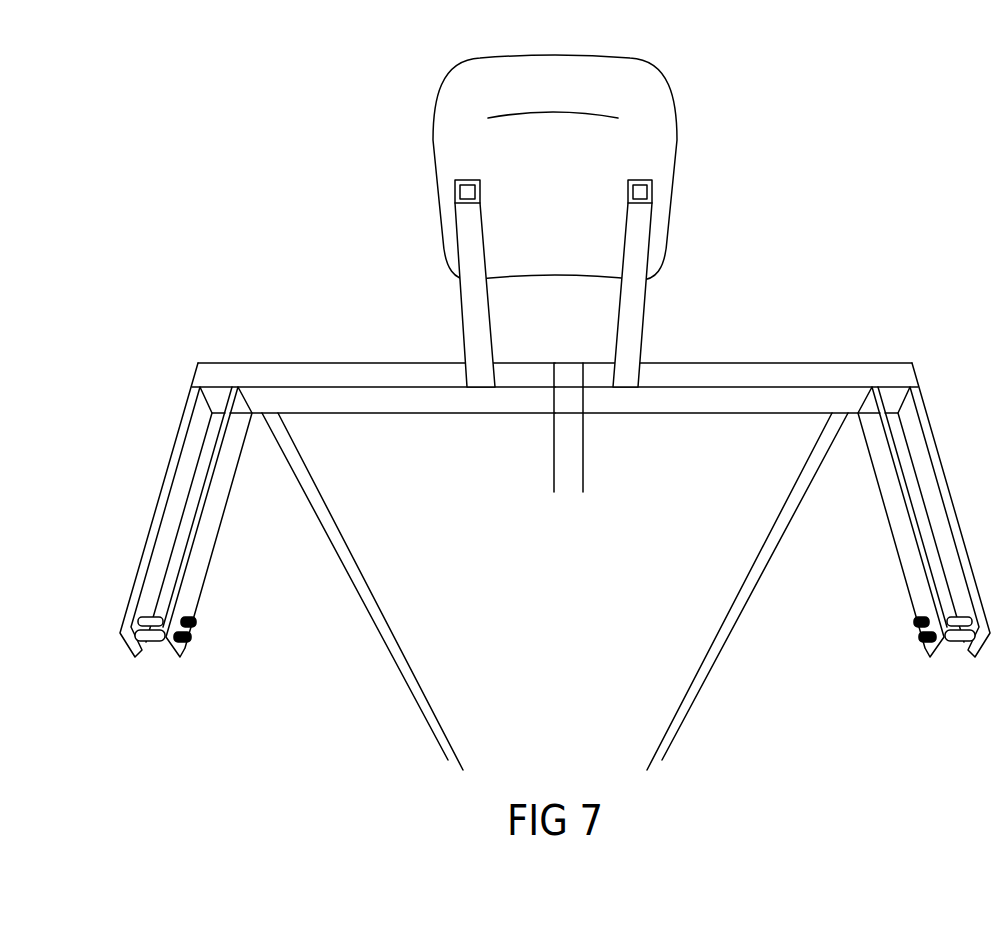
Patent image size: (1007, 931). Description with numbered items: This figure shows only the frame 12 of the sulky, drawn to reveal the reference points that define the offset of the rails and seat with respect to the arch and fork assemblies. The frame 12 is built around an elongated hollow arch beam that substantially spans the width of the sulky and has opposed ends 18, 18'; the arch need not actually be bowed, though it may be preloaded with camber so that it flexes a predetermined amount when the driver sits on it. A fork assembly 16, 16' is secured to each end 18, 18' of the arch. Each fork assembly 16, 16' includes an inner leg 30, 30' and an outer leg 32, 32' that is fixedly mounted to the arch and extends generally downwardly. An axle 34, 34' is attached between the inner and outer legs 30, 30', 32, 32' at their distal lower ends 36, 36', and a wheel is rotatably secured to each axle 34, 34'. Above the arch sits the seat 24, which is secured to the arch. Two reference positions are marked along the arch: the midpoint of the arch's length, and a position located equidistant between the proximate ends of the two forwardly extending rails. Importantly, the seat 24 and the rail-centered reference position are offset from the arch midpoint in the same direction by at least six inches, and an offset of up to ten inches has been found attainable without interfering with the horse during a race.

The frame 12 is at (720, 229).
The fork assembly 16 is at (192, 480).
The fork assembly 16' is at (921, 479).
The end of the arch 18 is at (339, 385).
The end of the arch 18' is at (772, 385).
The seat 24 is at (460, 96).
The inner leg 30 is at (218, 522).
The inner leg 30' is at (892, 522).
The outer leg 32 is at (176, 510).
The outer leg 32' is at (936, 510).
The axle 34 is at (182, 659).
The axle 34' is at (928, 659).
The distal lower end 36 is at (211, 639).
The distal lower end 36' is at (898, 639).